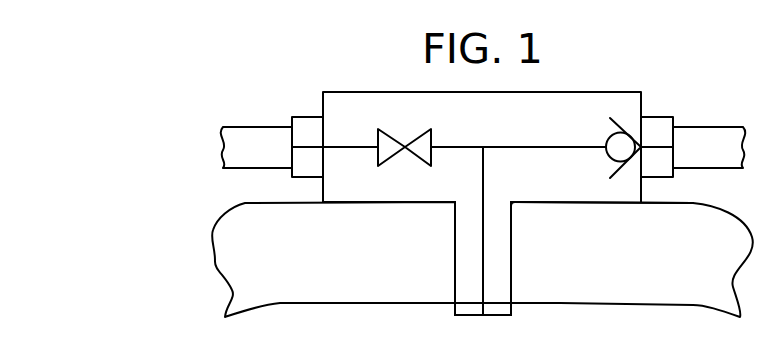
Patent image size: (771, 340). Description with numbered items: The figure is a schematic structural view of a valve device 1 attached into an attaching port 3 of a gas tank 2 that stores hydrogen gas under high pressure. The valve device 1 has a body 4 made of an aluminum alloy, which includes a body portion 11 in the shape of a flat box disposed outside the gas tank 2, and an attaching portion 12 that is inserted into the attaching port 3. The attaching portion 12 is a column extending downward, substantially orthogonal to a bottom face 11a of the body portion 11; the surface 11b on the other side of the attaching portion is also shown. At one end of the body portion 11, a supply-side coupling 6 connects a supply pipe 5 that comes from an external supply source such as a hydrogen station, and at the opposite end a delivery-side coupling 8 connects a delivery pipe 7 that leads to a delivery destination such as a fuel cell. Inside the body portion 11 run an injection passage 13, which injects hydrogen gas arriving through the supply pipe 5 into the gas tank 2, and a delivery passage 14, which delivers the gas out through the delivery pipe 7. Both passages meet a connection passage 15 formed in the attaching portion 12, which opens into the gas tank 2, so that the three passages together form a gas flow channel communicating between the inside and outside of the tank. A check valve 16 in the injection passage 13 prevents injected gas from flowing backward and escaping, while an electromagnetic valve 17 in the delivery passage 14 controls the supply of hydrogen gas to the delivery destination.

The valve device 1 is at (150, 100).
The gas tank 2 is at (245, 212).
The attaching port 3 is at (509, 232).
The body 4 is at (406, 215).
The supply pipe 5 is at (711, 127).
The supply-side coupling 6 is at (663, 117).
The delivery pipe 7 is at (252, 127).
The delivery-side coupling 8 is at (305, 117).
The body portion 11 is at (418, 199).
The bottom face 11a is at (350, 205).
The second upper surface 11b is at (642, 194).
The attaching portion 12 is at (457, 252).
The injection passage 13 is at (524, 147).
The delivery passage 14 is at (358, 147).
The connection passage 15 is at (486, 266).
The check valve 16 is at (624, 130).
The electromagnetic valve 17 is at (393, 133).